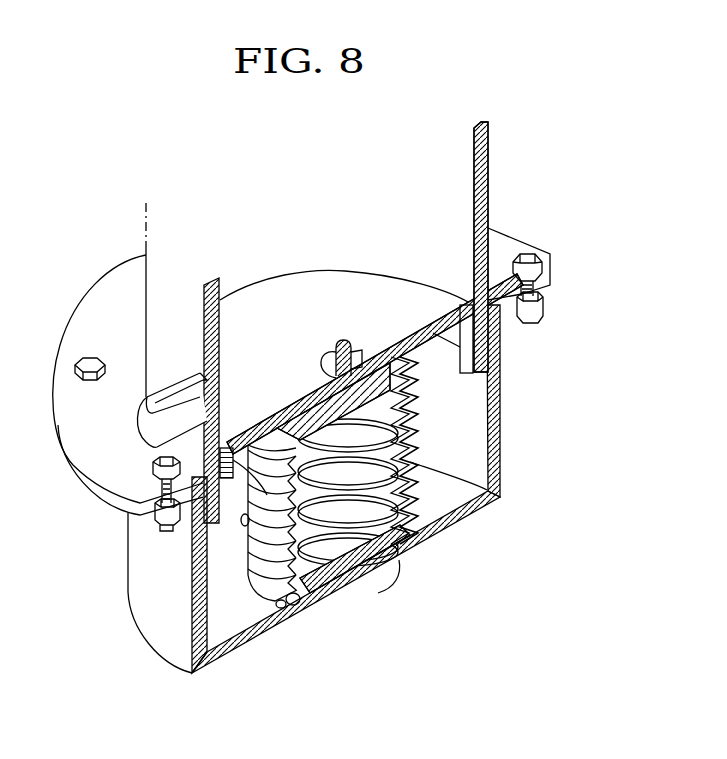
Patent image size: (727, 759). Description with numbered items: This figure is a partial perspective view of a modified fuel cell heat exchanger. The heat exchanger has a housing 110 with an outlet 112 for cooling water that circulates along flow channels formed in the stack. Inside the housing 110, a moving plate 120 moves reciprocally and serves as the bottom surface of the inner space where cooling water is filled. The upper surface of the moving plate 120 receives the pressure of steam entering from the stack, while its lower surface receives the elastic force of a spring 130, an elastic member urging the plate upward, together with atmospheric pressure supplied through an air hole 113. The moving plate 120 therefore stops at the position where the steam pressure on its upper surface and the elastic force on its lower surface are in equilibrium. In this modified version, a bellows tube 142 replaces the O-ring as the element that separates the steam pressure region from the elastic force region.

The housing 110 is at (490, 213).
The outlet 112 is at (118, 478).
The air hole 113 is at (295, 607).
The moving plate 120 is at (545, 300).
The spring 130 is at (390, 587).
The bellows tube 142 is at (452, 517).